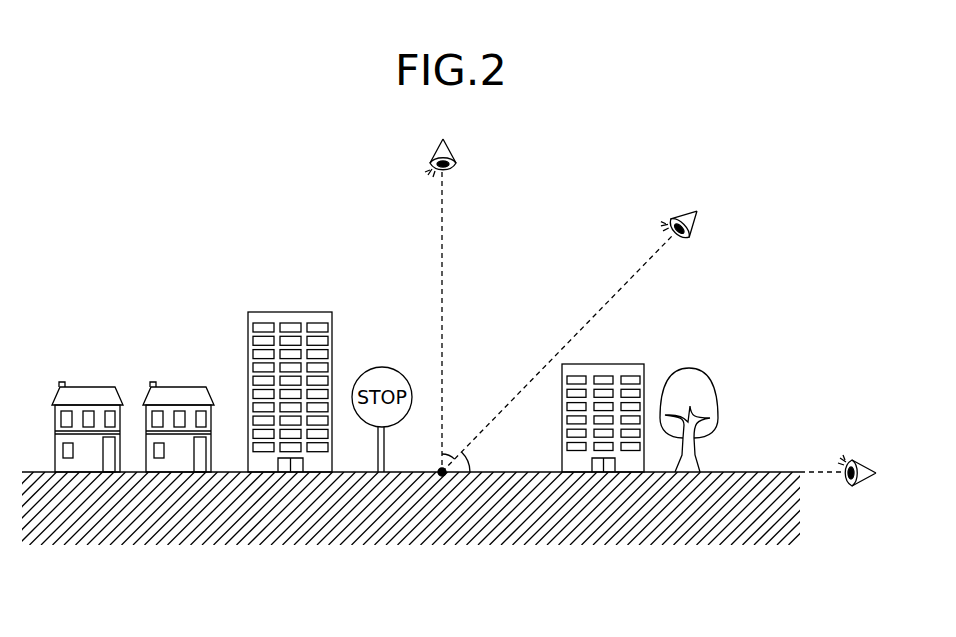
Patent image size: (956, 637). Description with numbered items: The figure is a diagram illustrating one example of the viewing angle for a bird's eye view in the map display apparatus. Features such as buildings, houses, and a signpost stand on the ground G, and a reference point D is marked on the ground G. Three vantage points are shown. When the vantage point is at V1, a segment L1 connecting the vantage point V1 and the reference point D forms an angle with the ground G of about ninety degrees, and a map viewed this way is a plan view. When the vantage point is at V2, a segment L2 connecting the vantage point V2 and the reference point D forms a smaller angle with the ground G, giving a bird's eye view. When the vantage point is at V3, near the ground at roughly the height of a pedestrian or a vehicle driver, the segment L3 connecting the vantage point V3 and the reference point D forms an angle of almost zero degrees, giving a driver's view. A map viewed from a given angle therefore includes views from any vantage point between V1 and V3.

The vantage point V1 is at (458, 158).
The vantage point V2 is at (684, 217).
The vantage point V3 is at (858, 462).
The segment L1 is at (444, 253).
The segment L2 is at (597, 315).
The segment L3 is at (818, 471).
The reference point D is at (444, 478).
The ground G is at (769, 475).